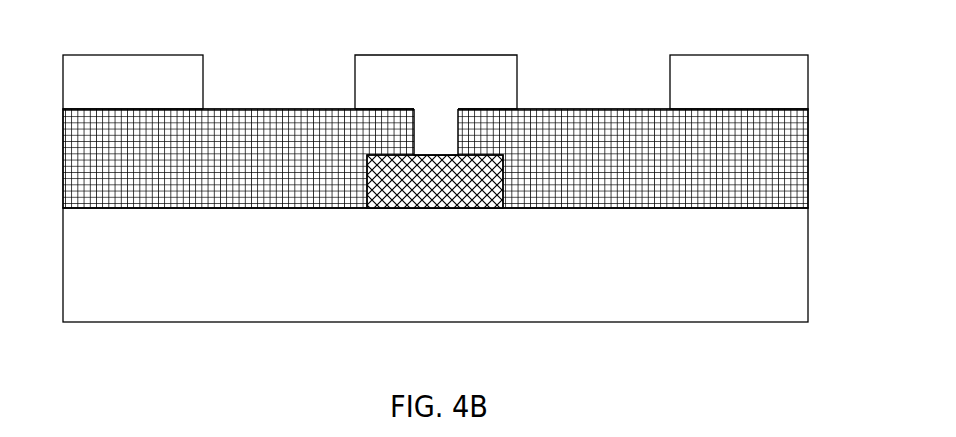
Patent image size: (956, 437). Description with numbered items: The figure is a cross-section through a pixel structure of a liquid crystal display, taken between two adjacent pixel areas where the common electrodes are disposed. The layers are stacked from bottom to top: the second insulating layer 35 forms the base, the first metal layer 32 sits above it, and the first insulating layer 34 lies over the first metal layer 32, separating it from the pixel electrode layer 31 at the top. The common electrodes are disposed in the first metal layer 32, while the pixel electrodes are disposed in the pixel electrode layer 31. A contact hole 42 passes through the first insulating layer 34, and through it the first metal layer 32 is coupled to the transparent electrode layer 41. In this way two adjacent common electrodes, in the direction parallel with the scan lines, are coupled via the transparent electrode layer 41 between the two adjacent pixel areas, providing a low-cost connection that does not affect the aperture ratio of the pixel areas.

The pixel electrode layer 31 is at (767, 85).
The first metal layer 32 is at (453, 195).
The first insulating layer 34 is at (767, 137).
The second insulating layer 35 is at (767, 263).
The transparent electrode layer 41 is at (429, 100).
The contact hole 42 is at (442, 145).